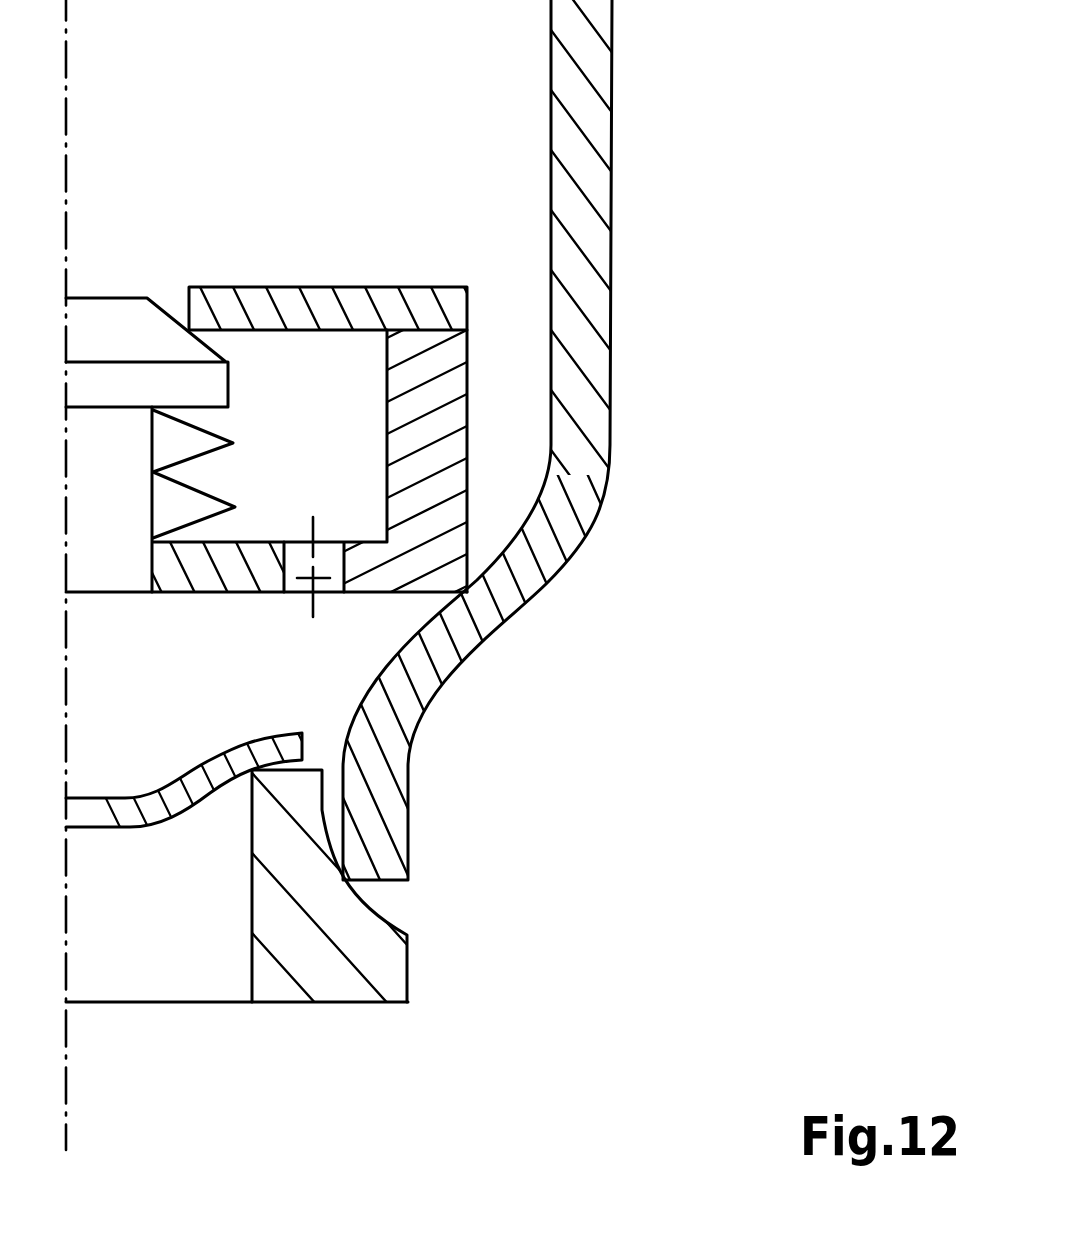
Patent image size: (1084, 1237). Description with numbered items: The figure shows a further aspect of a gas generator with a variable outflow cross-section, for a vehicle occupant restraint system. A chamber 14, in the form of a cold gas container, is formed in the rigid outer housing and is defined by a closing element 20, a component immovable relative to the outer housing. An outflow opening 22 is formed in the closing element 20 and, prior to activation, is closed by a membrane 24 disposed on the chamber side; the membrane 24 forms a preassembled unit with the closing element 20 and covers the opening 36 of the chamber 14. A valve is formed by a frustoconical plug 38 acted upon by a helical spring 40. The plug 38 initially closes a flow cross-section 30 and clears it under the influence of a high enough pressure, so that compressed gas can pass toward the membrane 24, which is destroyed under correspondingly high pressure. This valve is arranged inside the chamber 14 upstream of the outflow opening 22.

The chamber 14 is at (403, 60).
The closing element 20 is at (388, 958).
The outflow opening 22 is at (297, 600).
The membrane 24 is at (107, 808).
The flow cross-section 30 is at (170, 270).
The opening of the chamber 36 is at (170, 963).
The frustoconical plug 38 is at (90, 312).
The helical spring 40 is at (233, 443).